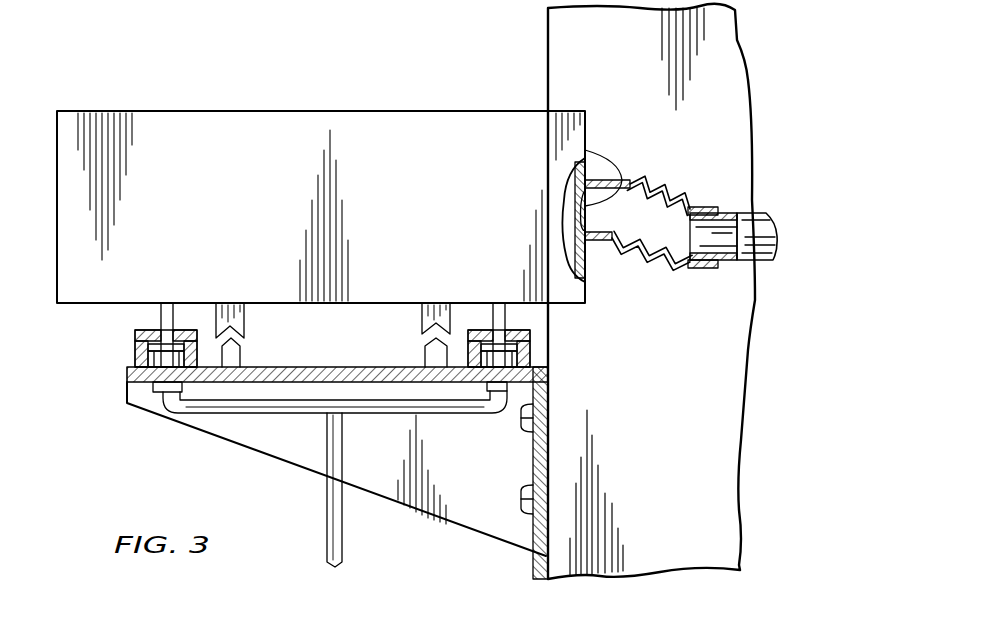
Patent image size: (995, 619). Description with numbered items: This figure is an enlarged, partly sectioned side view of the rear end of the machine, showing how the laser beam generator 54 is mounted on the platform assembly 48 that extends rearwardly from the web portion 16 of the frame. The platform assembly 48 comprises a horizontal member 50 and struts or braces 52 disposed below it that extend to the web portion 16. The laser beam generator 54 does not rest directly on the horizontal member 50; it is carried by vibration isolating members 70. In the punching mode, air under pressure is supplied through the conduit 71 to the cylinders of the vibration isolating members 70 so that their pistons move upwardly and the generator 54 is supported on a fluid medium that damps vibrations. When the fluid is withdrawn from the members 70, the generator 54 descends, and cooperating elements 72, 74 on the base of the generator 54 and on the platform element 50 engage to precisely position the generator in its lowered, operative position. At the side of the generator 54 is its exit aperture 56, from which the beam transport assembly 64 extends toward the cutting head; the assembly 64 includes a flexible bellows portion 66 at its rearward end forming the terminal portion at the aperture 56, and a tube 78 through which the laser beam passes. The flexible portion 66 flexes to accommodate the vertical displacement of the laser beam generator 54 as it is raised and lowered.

The web portion 16 is at (720, 372).
The platform assembly 48 is at (140, 408).
The horizontal member 50 is at (318, 380).
The struts or braces 52 is at (475, 503).
The laser beam generator 54 is at (433, 107).
The exit aperture 56 is at (620, 172).
The beam transport assembly 64 is at (768, 210).
The flexible bellows portion 66 is at (648, 198).
The vibration isolating members 70 is at (135, 340).
The conduit 71 is at (330, 494).
The cooperating element 72 is at (432, 303).
The cooperating element 74 is at (425, 358).
The tube 78 is at (758, 262).